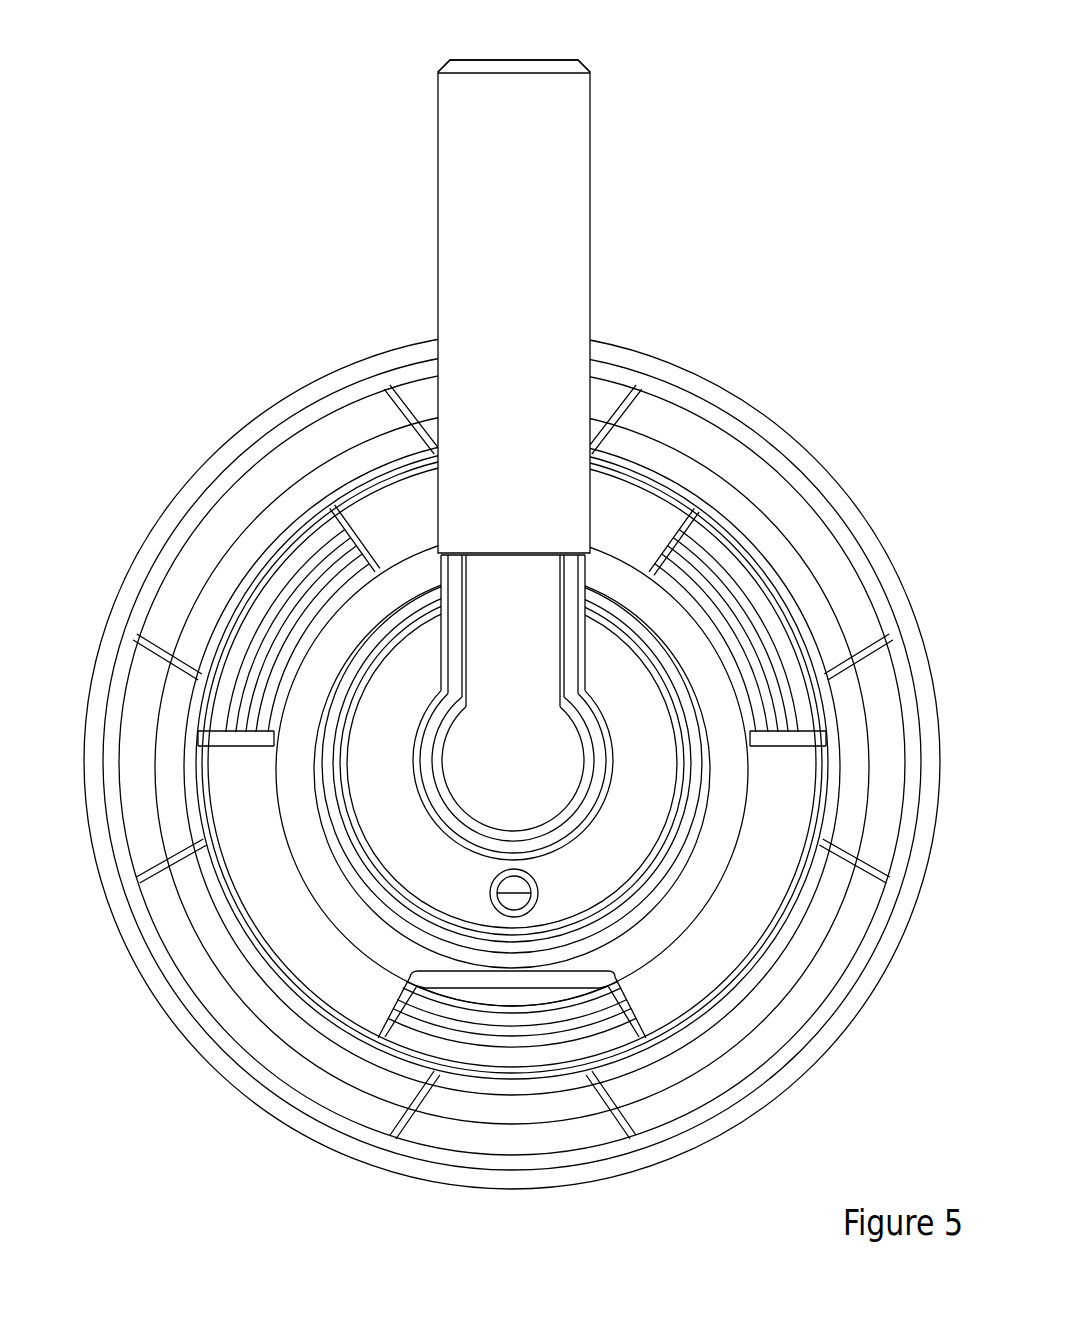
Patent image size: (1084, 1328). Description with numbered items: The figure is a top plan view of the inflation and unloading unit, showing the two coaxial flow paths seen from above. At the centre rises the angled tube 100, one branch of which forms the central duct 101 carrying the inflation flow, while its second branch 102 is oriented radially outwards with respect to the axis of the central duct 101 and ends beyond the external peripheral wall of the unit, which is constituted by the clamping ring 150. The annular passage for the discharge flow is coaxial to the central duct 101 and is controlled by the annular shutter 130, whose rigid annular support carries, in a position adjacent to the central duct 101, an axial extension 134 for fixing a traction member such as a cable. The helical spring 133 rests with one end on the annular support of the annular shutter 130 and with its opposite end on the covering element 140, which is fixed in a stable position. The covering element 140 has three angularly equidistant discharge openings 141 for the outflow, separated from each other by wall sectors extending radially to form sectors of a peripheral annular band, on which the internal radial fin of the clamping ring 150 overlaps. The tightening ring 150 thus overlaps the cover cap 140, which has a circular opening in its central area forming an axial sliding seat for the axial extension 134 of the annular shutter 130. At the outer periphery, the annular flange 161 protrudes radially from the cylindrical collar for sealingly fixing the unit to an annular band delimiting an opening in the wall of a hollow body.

The angled tube 100 is at (590, 253).
The central duct 101 is at (555, 790).
The second branch 102 is at (582, 82).
The annular shutter 130 is at (463, 1025).
The helical spring 133 is at (290, 628).
The axial extension 134 is at (388, 816).
The covering element 140 is at (372, 487).
The discharge openings 141 is at (687, 628).
The clamping ring 150 is at (133, 588).
The annular flange 161 is at (787, 1092).